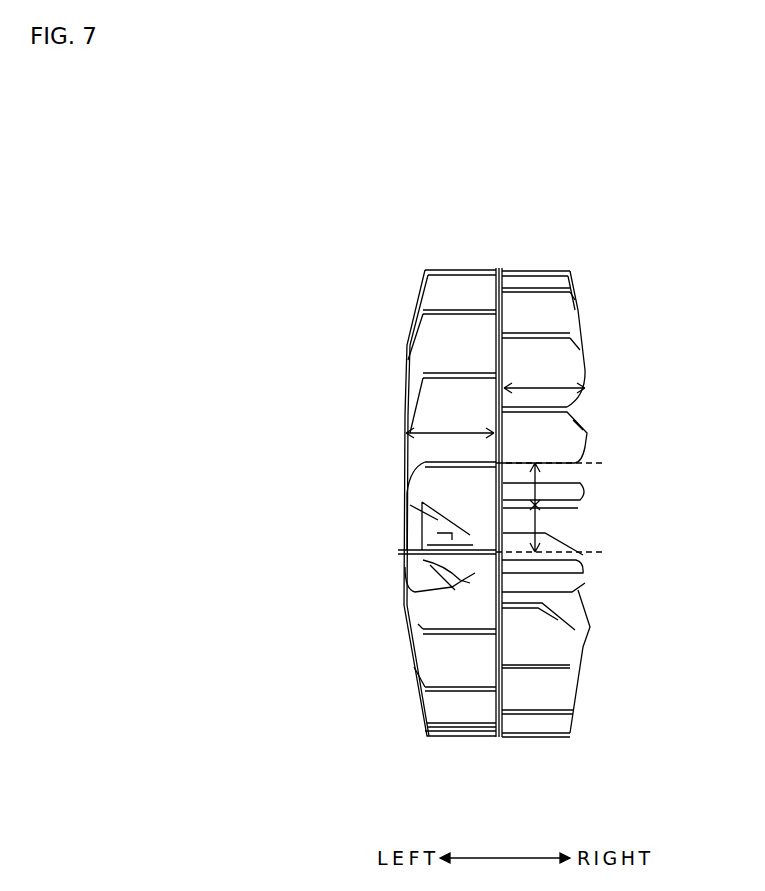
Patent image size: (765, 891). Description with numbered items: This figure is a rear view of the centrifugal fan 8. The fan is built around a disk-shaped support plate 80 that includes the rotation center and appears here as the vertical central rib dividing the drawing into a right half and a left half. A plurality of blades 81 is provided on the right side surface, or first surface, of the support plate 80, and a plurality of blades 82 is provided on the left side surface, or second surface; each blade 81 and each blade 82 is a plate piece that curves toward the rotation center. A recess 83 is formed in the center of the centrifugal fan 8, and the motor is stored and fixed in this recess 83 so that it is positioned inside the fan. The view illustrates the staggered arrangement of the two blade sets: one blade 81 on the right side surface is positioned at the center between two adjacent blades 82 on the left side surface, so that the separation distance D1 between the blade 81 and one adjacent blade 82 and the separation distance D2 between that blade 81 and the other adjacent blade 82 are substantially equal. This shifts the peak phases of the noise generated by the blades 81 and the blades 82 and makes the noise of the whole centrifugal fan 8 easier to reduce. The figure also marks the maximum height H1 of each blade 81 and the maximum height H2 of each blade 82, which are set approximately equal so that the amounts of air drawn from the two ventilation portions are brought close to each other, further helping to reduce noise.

The centrifugal fan 8 is at (613, 266).
The support plate 80 is at (497, 737).
The blade 81 is at (553, 510).
The blade 82 is at (422, 463).
The recess 83 is at (433, 523).
The maximum height of blade 81 H1 is at (548, 385).
The maximum height of blade 82 H2 is at (445, 430).
The separation distance D1 is at (540, 480).
The separation distance D2 is at (547, 530).